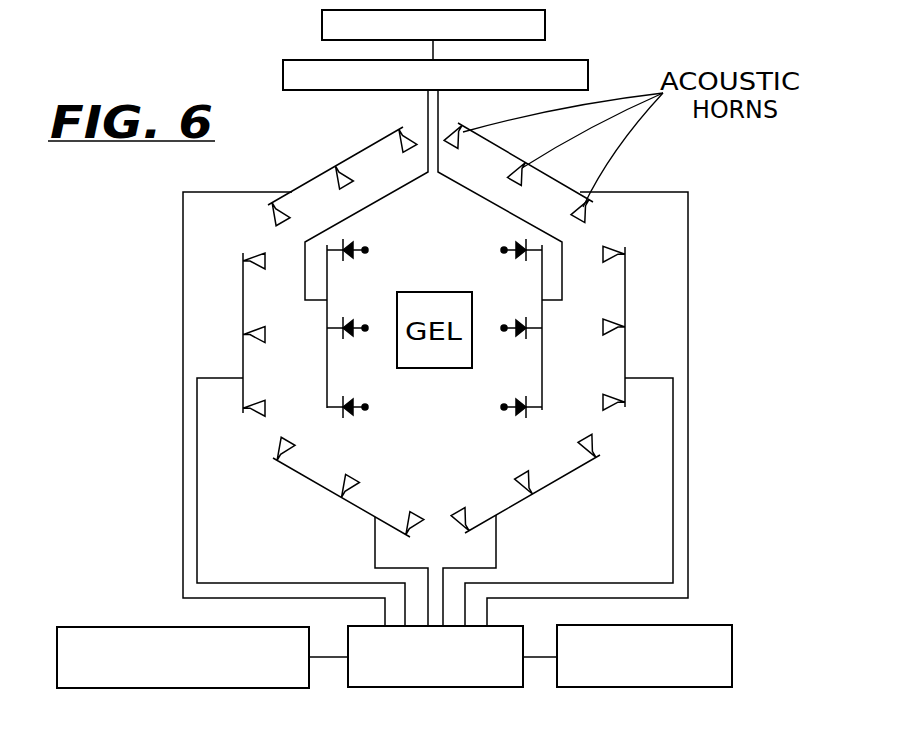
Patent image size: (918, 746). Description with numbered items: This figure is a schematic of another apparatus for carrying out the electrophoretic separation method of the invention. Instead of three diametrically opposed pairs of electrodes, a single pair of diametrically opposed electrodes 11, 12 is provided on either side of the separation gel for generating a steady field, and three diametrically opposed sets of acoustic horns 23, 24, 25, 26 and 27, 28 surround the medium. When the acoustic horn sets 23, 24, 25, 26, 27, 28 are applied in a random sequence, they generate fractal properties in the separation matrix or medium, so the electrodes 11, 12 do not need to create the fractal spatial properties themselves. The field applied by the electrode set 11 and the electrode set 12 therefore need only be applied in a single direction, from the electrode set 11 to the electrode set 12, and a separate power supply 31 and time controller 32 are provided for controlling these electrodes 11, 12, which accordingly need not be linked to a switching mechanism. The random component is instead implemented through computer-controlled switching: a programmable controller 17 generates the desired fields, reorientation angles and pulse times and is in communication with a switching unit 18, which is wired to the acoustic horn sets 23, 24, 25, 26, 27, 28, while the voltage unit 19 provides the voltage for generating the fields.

The electrode set 11 is at (327, 388).
The electrode set 12 is at (542, 391).
The programmable controller 17 is at (122, 626).
The switching unit 18 is at (352, 626).
The voltage unit 19 is at (732, 655).
The acoustic horn set 23 is at (243, 352).
The acoustic horn set 24 is at (625, 322).
The acoustic horn set 25 is at (357, 154).
The acoustic horn set 26 is at (568, 473).
The acoustic horn set 27 is at (565, 186).
The acoustic horn set 28 is at (297, 472).
The power supply 31 is at (498, 12).
The time controller 32 is at (588, 79).